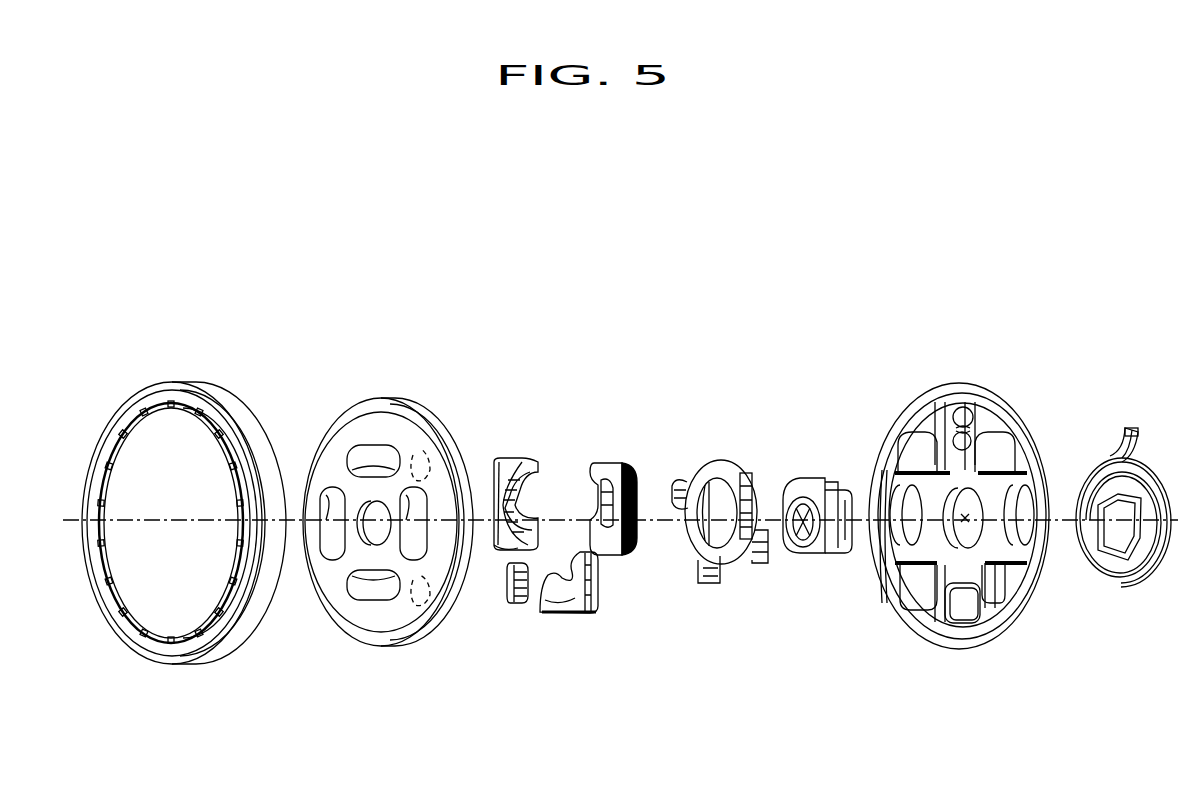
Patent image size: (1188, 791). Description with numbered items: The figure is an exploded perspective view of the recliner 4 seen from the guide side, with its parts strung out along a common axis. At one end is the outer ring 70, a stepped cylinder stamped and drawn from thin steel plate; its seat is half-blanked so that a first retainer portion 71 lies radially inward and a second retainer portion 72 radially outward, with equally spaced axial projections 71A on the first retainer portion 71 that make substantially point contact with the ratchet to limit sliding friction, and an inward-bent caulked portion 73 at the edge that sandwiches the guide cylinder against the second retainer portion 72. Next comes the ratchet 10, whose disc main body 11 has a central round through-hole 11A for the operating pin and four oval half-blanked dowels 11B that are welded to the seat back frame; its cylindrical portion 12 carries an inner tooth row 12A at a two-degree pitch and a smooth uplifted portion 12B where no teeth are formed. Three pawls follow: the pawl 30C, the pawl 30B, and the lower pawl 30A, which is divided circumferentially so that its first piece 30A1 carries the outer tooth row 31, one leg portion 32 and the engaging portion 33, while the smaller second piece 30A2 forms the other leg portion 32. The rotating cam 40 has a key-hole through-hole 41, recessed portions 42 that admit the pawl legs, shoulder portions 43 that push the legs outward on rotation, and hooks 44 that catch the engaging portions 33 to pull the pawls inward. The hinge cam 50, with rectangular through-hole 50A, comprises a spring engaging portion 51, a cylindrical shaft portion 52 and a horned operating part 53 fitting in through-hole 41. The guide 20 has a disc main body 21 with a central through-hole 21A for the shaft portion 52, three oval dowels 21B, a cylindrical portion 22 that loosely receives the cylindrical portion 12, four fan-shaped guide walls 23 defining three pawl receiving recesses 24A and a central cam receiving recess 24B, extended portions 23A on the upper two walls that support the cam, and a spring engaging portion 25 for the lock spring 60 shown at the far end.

The recliner 4 is at (261, 205).
The outer ring 70 is at (184, 525).
The first retainer portion 71 is at (177, 412).
The projections 71A is at (215, 613).
The second retainer portion 72 is at (232, 612).
The caulked portion 73 is at (245, 422).
The ratchet 10 is at (384, 531).
The disc main body 11 is at (332, 467).
The through-hole 11A is at (375, 540).
The dowels 11B is at (373, 457).
The cylindrical portion 12 is at (412, 647).
The inner tooth row 12A is at (422, 620).
The uplifted portion 12B is at (423, 457).
The pawl 30A is at (572, 608).
The first piece 30A1 is at (583, 590).
The second piece 30A2 is at (513, 587).
The pawl 30B is at (613, 573).
The pawl 30C is at (521, 476).
The outer tooth row 31 is at (492, 487).
The leg portions 32 is at (517, 492).
The engaging portion 33 is at (493, 548).
The rotating cam 40 is at (716, 531).
The through-hole 41 is at (718, 510).
The recessed portions 42 is at (683, 500).
The shoulder portions 43 is at (752, 500).
The hooks 44 is at (673, 498).
The hinge cam 50 is at (823, 521).
The through-hole 50A is at (802, 540).
The spring engaging portion 51 is at (840, 547).
The shaft portion 52 is at (830, 517).
The operating part 53 is at (793, 478).
The guide 20 is at (958, 515).
The disc main body 21 is at (925, 440).
The through-hole 21A is at (962, 512).
The dowels 21B is at (1038, 552).
The cylindrical portion 22 is at (1037, 450).
The guide walls 23 is at (912, 430).
The extended portions 23A is at (935, 425).
The pawl receiving recesses 24A is at (895, 472).
The cam receiving recess 24B is at (1005, 580).
The spring engaging portion 25 is at (972, 405).
The lock spring 60 is at (1128, 422).